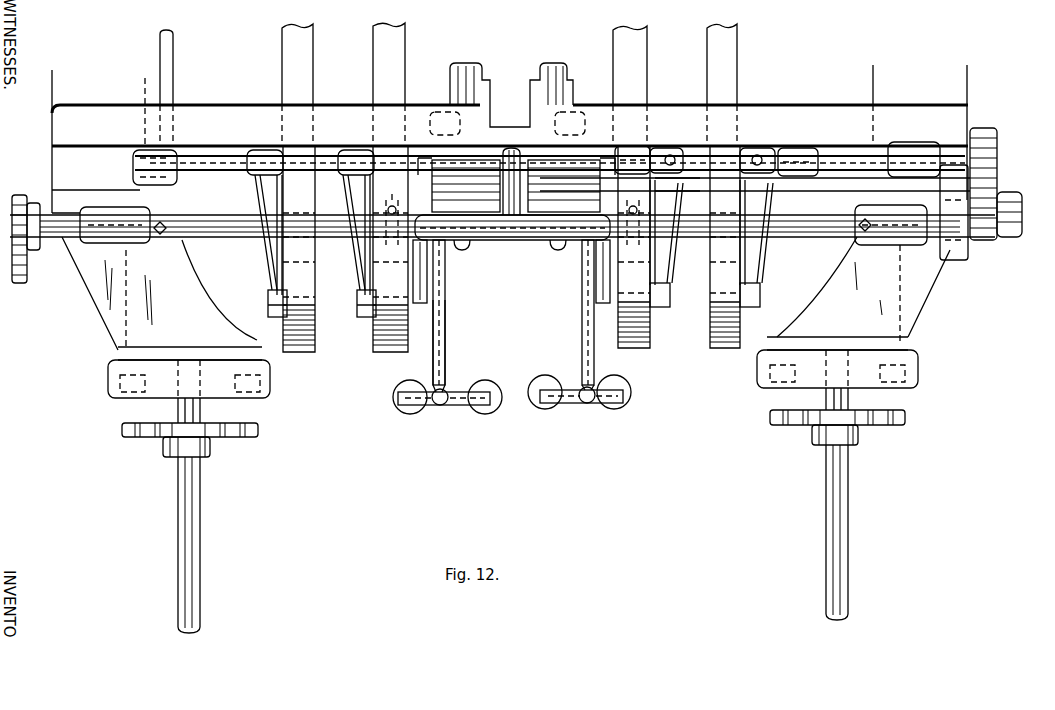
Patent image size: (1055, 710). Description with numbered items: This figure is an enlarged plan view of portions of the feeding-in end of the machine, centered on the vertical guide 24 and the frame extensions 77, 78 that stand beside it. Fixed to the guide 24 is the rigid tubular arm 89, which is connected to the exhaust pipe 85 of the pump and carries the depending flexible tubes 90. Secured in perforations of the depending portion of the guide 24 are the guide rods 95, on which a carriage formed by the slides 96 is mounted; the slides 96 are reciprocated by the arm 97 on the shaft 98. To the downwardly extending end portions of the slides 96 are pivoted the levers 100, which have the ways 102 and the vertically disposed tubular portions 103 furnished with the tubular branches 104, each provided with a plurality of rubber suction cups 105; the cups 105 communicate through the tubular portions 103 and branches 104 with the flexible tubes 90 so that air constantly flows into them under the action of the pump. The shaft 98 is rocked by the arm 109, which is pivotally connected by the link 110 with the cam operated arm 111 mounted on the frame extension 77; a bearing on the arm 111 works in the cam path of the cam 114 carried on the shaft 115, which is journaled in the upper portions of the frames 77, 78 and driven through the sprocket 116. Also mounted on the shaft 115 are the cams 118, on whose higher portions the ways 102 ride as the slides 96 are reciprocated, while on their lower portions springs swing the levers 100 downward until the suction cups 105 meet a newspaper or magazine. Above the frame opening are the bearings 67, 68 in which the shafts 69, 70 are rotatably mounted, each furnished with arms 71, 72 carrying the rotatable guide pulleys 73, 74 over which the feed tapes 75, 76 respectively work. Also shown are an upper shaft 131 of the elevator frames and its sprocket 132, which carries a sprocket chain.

The vertical guide 24 is at (510, 139).
The exhaust pipe 85 is at (177, 57).
The feed tapes 76 is at (378, 37).
The feed tapes 75 is at (720, 37).
The guide rods 95 is at (553, 62).
The shaft 70 is at (222, 176).
The bearings 68 is at (132, 163).
The guide pulleys 74 is at (372, 333).
The guide pulleys 73 is at (710, 328).
The arms 72 is at (358, 250).
The arms 71 is at (762, 238).
The cams 118 is at (633, 243).
The bearings 67 is at (616, 158).
The shaft 69 is at (785, 147).
The shaft 98 is at (712, 193).
The arm 109 is at (953, 172).
The sprocket 116 is at (31, 250).
The shaft 115 is at (837, 228).
The cam 114 is at (1000, 153).
The link 110 is at (985, 240).
The cam operated arm 111 is at (948, 272).
The frame extension 78 is at (196, 290).
The frame extension 77 is at (830, 286).
The sprocket 132 is at (882, 425).
The upper shaft 131 is at (849, 485).
The tubular arm 89 is at (510, 245).
The arm 97 is at (489, 150).
The slides 96 is at (557, 263).
The ways 102 is at (603, 305).
The levers 100 is at (582, 282).
The flexible tubes 90 is at (585, 325).
The tubular portions 103 is at (585, 404).
The tubular branches 104 is at (568, 404).
The suction cups 105 is at (544, 383).